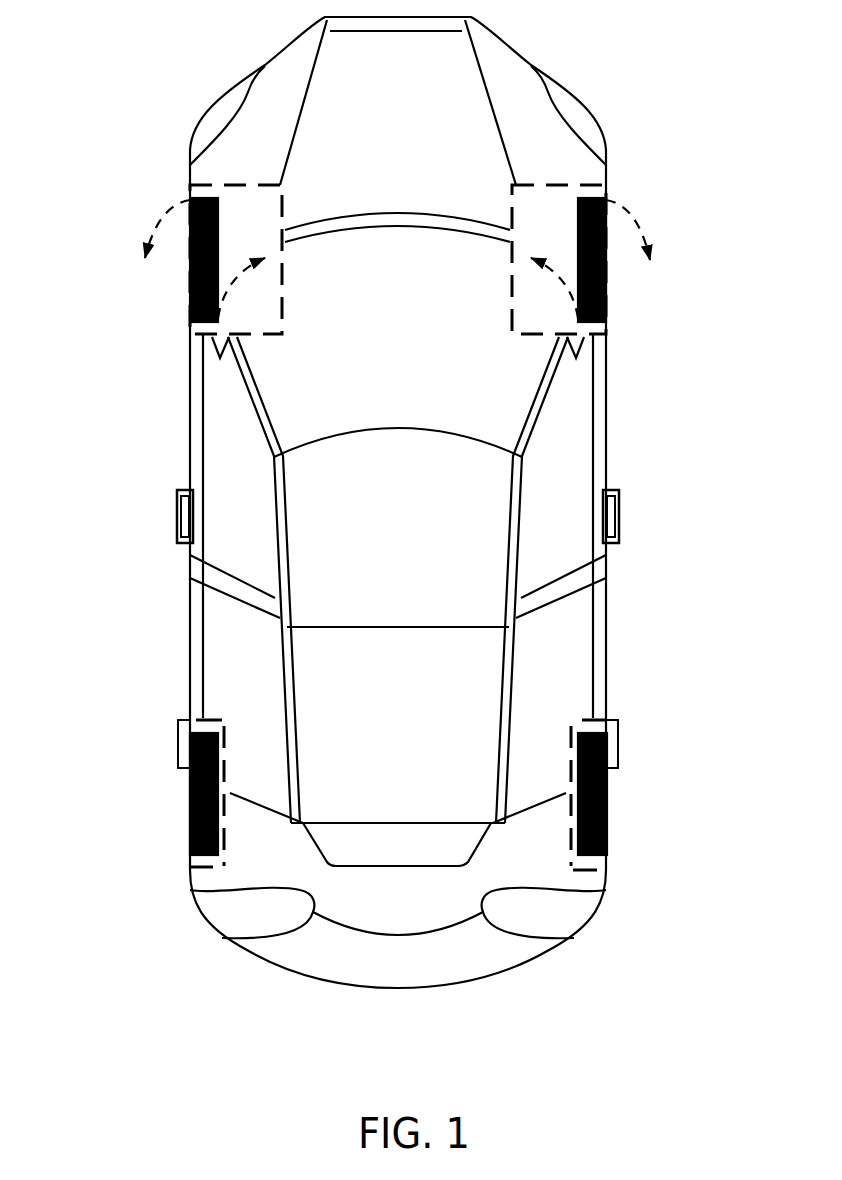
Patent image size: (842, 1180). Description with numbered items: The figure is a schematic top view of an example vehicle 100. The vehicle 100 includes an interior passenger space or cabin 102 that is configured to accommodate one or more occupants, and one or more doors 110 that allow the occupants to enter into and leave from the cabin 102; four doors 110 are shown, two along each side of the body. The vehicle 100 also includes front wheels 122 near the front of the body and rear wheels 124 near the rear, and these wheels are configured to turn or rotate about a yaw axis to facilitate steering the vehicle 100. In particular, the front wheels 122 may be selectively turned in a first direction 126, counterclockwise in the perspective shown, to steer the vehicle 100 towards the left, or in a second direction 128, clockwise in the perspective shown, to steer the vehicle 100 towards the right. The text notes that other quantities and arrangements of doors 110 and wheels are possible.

The vehicle 100 is at (667, 52).
The cabin 102 is at (395, 460).
The doors 110 is at (222, 458).
The front wheels 122 is at (190, 300).
The rear wheels 124 is at (190, 792).
The first direction 126 is at (147, 220).
The second direction 128 is at (637, 210).